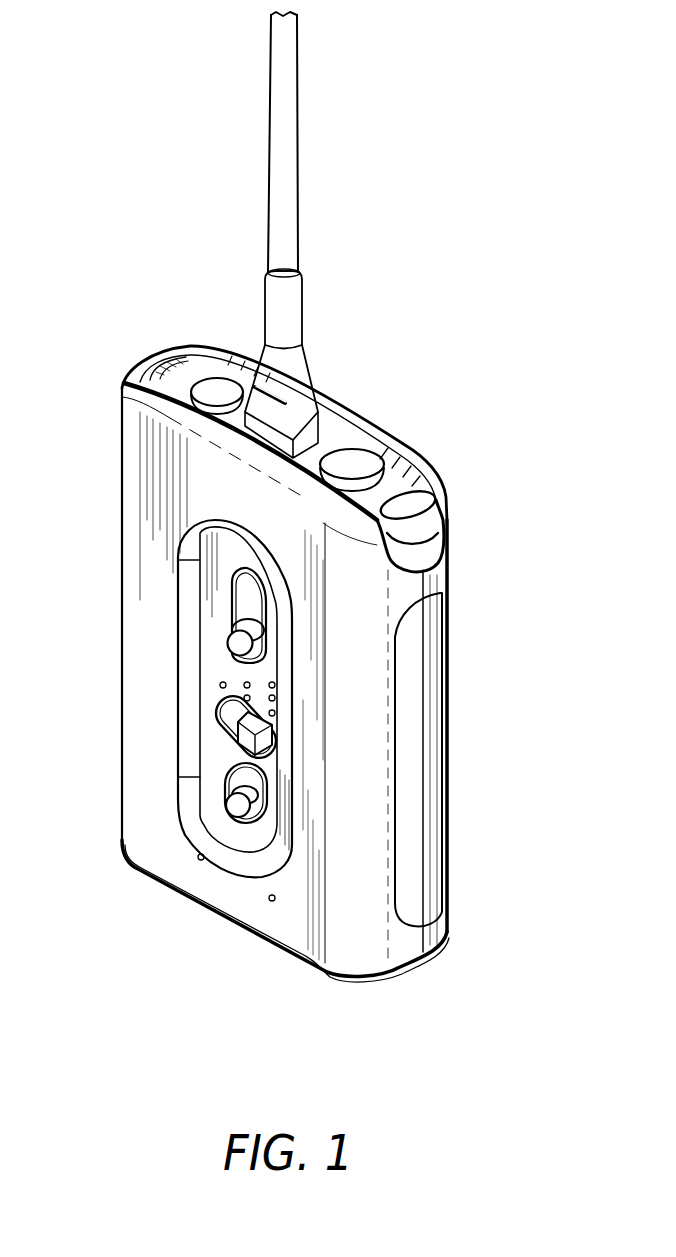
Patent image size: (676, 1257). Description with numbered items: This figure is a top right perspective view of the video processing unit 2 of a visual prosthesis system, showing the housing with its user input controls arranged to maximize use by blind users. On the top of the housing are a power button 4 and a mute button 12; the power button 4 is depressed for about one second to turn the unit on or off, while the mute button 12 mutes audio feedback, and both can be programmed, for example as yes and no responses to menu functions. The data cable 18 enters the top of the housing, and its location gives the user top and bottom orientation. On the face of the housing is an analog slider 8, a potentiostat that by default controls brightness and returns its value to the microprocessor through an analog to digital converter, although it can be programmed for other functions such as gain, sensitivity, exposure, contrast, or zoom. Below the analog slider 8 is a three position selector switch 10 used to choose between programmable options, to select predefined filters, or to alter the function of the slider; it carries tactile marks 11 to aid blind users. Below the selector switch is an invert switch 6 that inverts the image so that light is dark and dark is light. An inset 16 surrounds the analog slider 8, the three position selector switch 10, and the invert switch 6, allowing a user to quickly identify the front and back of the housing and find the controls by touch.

The video processing unit 2 is at (483, 968).
The power button 4 is at (358, 468).
The invert switch 6 is at (240, 833).
The analog slider 8 is at (238, 645).
The three position selector switch 10 is at (280, 742).
The tactile marks 11 is at (277, 685).
The mute button 12 is at (217, 388).
The inset 16 is at (180, 806).
The data cable 18 is at (297, 145).